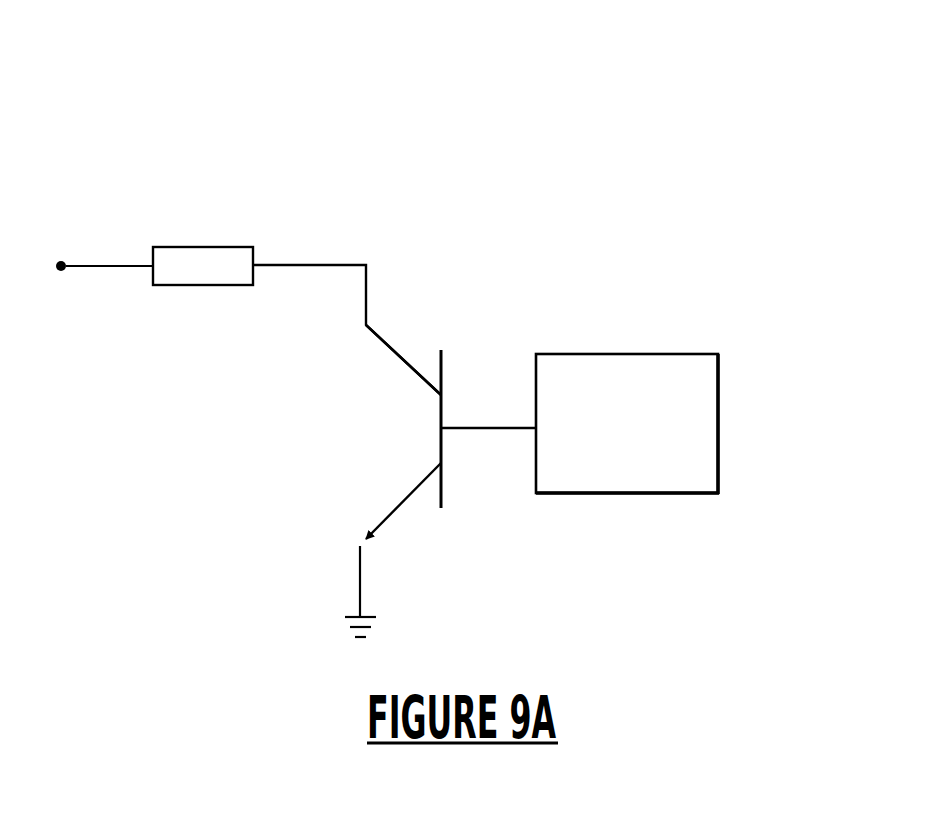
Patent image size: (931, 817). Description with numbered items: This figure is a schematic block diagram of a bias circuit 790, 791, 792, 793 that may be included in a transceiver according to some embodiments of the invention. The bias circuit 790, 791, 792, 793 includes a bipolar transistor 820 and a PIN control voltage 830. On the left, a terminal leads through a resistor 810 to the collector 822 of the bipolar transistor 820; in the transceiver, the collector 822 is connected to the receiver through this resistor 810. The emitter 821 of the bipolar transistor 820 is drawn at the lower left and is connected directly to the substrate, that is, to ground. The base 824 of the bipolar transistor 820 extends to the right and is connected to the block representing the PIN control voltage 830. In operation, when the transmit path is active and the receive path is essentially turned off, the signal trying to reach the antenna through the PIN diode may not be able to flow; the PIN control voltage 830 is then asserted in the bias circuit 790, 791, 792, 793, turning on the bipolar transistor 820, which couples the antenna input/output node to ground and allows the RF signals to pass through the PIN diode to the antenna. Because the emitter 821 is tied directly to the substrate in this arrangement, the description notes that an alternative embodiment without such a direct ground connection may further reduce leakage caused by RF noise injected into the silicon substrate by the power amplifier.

The bias circuit 790 is at (203, 100).
The bias circuit 791 is at (439, 406).
The bias circuit 792 is at (439, 406).
The bias circuit 793 is at (439, 406).
The resistor 810 is at (192, 262).
The bipolar transistor 820 is at (566, 319).
The emitter 821 is at (364, 546).
The collector 822 is at (383, 338).
The base 824 is at (494, 431).
The PIN control voltage 830 is at (700, 452).